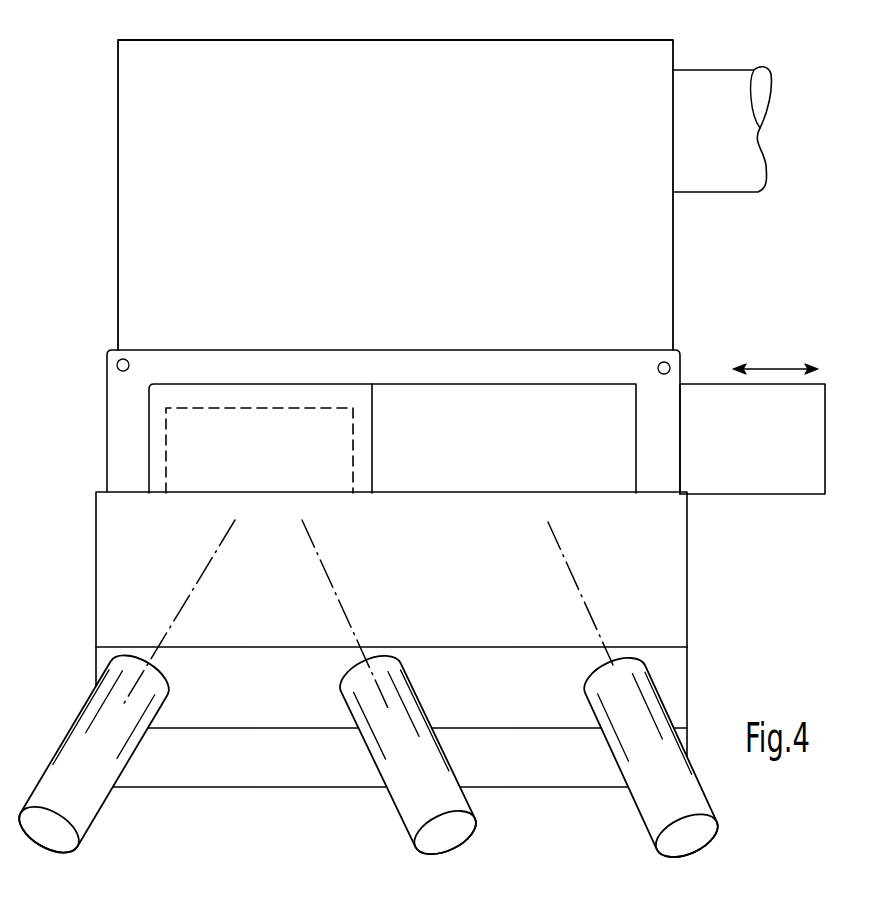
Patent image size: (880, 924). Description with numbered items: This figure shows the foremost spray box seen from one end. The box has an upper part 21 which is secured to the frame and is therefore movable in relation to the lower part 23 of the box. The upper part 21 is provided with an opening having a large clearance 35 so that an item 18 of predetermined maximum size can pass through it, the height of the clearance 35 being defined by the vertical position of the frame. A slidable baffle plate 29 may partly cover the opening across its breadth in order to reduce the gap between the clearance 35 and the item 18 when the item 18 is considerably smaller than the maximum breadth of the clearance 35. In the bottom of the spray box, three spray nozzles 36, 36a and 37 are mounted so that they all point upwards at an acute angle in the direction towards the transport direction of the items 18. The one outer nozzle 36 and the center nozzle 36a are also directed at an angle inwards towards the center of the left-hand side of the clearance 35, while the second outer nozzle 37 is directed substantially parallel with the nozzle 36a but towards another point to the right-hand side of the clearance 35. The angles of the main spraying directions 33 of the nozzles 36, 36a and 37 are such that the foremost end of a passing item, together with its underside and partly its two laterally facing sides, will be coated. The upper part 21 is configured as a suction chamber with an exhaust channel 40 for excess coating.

The upper part 21 is at (400, 198).
The exhaust channel 40 is at (738, 170).
The clearance 35 is at (173, 395).
The item 18 is at (192, 443).
The slidable baffle plate 29 is at (505, 452).
The lower part 23 is at (686, 583).
The main spraying directions 33 is at (327, 577).
The outer spray nozzle 36 is at (88, 787).
The center spray nozzle 36a is at (407, 800).
The second outer spray nozzle 37 is at (648, 795).